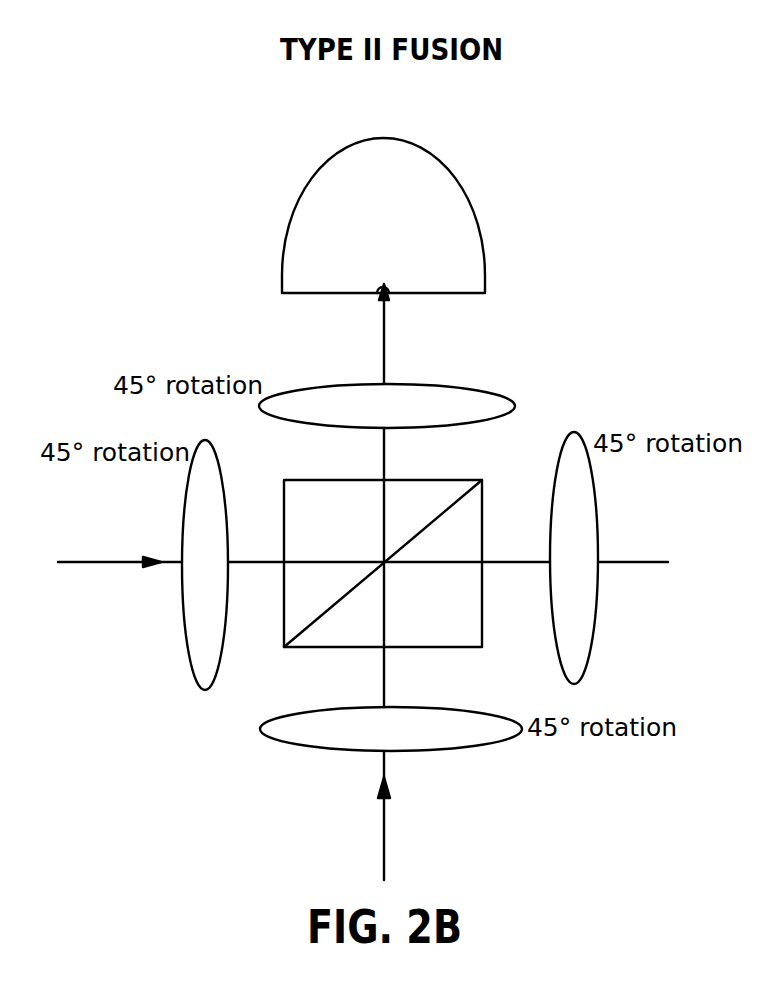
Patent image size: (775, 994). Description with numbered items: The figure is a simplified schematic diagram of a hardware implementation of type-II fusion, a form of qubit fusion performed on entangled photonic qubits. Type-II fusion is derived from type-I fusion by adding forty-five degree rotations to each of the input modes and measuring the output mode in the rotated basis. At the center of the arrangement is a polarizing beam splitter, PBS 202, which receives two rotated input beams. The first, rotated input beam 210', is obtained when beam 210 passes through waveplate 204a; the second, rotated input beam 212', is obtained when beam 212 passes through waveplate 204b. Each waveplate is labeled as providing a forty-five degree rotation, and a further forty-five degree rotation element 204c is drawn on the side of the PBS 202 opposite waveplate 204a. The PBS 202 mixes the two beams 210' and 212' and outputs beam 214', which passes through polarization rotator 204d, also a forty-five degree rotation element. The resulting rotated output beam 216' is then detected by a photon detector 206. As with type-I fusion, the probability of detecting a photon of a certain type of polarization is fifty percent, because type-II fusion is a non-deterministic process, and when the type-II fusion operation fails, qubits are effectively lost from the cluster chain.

The PBS 202 is at (432, 647).
The waveplate 204a is at (188, 638).
The waveplate 204b is at (480, 747).
The 45 degree rotation element (lens/rotator) 204c is at (597, 520).
The polarization rotator 204d is at (488, 389).
The photon detector 206 is at (440, 158).
The beam 210 is at (113, 588).
The rotated input beam 210' is at (256, 510).
The beam 212 is at (432, 816).
The rotated input beam 212' is at (326, 677).
The output beam 214' is at (438, 454).
The rotated output beam 216' is at (435, 333).